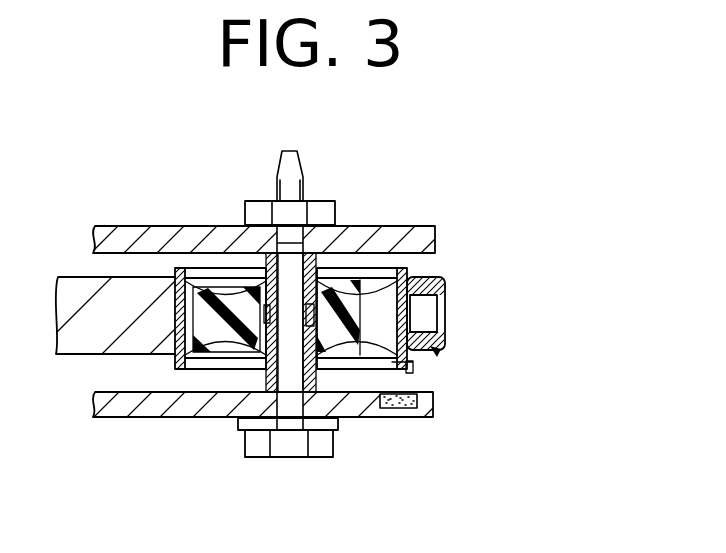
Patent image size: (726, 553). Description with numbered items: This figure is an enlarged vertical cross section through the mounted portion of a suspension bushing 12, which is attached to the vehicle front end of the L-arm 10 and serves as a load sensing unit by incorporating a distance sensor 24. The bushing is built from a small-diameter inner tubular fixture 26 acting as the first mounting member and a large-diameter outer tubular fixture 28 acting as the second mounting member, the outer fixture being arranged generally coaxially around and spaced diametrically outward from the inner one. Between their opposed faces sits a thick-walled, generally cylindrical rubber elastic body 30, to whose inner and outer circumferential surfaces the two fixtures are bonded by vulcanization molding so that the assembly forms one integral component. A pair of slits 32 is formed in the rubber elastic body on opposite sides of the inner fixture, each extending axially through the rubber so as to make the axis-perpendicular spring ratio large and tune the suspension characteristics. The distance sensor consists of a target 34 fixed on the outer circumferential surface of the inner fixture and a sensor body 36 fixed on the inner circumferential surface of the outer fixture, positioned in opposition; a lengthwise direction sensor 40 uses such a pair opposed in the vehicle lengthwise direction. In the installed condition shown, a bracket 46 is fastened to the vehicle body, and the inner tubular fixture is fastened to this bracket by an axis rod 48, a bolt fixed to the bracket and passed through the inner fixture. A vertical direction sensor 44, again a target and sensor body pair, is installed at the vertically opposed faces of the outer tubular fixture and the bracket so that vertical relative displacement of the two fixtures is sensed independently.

The L-arm 10 is at (78, 347).
The suspension bushing 12 is at (213, 356).
The distance sensor 24 is at (303, 401).
The inner tubular fixture 26 is at (312, 372).
The outer tubular fixture 28 is at (176, 277).
The rubber elastic body 30 is at (335, 295).
The slits 32 is at (363, 322).
The target 34 is at (253, 282).
The sensor body 36 is at (423, 308).
The lengthwise direction sensor 40 is at (437, 355).
The vertical direction sensor 44 is at (408, 424).
The bracket 46 is at (423, 232).
The axis rod 48 is at (288, 407).